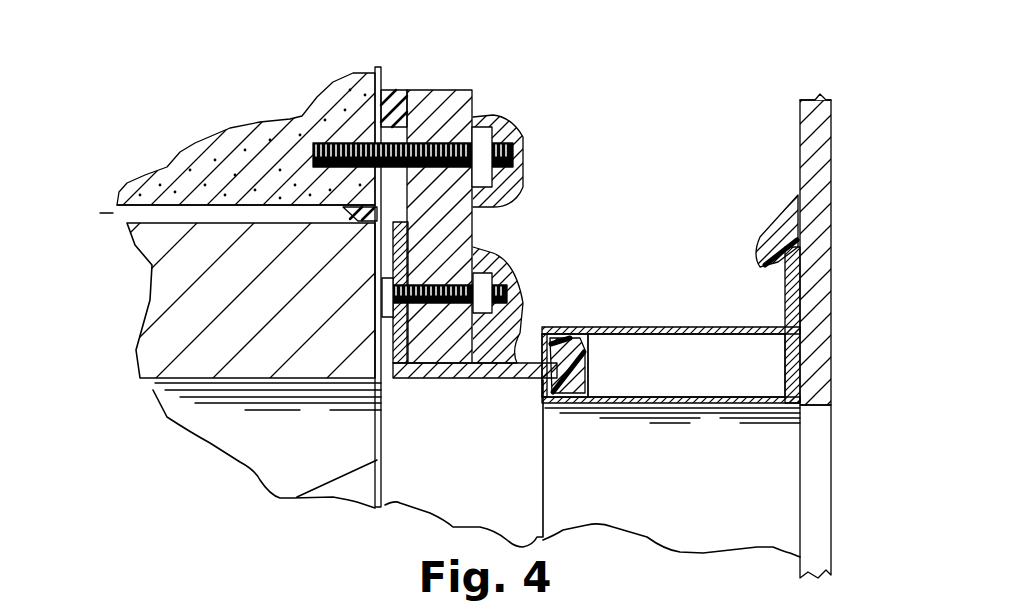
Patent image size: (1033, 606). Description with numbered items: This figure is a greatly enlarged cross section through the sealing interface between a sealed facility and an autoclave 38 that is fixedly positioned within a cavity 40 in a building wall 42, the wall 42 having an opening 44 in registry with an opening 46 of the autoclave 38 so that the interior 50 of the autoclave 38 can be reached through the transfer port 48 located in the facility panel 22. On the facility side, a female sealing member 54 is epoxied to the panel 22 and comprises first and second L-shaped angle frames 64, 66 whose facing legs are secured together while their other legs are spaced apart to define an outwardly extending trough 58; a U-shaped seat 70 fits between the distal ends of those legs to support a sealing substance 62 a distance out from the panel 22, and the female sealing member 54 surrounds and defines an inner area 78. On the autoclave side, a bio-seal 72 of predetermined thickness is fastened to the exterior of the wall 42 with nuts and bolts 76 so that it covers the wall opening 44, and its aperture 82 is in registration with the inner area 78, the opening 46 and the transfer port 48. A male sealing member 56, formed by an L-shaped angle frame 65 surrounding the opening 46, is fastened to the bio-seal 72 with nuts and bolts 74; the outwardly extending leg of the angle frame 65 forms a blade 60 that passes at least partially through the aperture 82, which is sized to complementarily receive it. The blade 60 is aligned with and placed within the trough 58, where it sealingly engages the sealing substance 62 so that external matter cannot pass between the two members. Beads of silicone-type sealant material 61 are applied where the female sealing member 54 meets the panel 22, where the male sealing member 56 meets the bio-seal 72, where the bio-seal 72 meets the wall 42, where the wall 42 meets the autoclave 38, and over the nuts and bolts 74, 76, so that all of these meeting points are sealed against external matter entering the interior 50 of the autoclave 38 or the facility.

The panel 22 is at (812, 168).
The autoclave 38 is at (150, 325).
The cavity 40 is at (140, 210).
The wall 42 is at (299, 117).
The opening 44 is at (470, 210).
The opening 46 is at (296, 502).
The transfer port 48 is at (820, 462).
The interior 50 is at (277, 459).
The female sealing member 54 is at (726, 290).
The male sealing member 56 is at (422, 400).
The trough 58 is at (590, 332).
The blade 60 is at (468, 380).
The sealant material 61 is at (242, 120).
The sealing substance 62 is at (554, 327).
The first L-shaped angle frame 64 is at (680, 327).
The L-shaped angle frame 65 is at (400, 345).
The second L-shaped angle frame 66 is at (637, 420).
The seat 70 is at (590, 367).
The bio-seal 72 is at (427, 240).
The nuts and bolts 74 is at (512, 252).
The nuts and bolts 76 is at (516, 106).
The inner area 78 is at (724, 509).
The aperture 82 is at (457, 508).